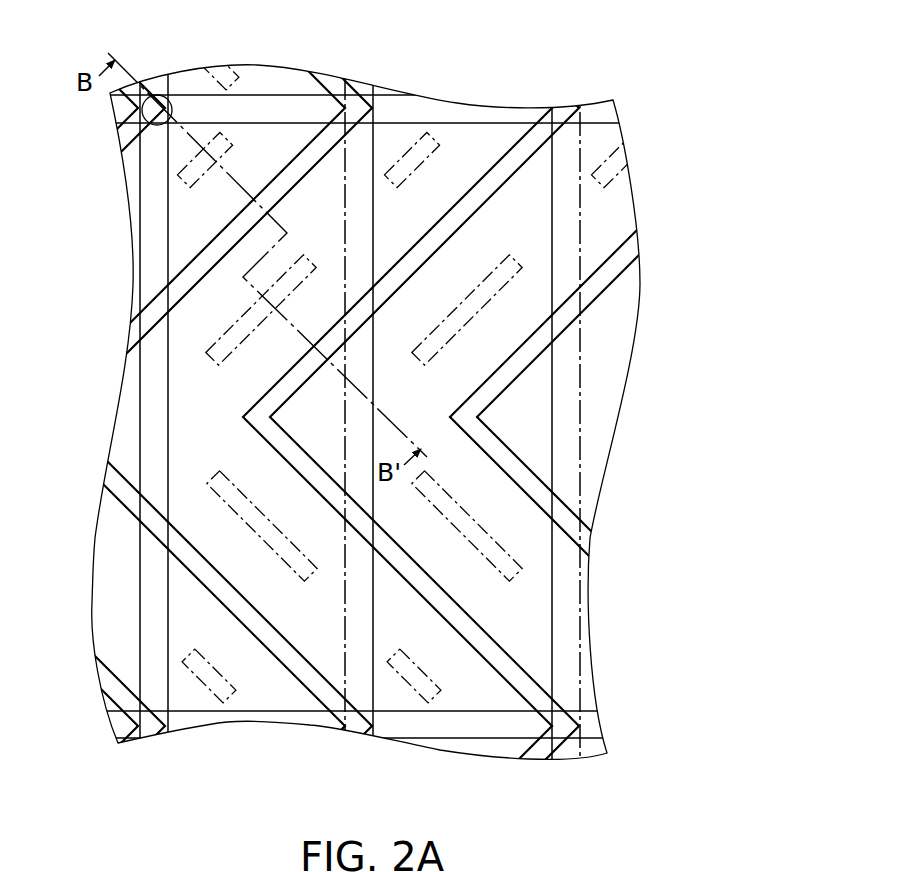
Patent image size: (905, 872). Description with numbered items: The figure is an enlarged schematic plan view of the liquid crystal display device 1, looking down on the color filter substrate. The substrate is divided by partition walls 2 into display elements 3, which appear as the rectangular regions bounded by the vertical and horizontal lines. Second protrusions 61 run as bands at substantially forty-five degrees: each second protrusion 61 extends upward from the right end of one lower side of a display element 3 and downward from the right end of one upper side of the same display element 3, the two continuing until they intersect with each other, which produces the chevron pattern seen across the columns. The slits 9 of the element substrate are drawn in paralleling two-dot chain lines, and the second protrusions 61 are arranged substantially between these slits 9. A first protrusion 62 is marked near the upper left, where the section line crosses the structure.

The liquid crystal display device 1 is at (604, 56).
The partition walls 2 is at (157, 433).
The display elements 3 is at (393, 436).
The slits 9 is at (288, 285).
The second protrusions 61 is at (260, 633).
The first protrusions 62 is at (142, 106).